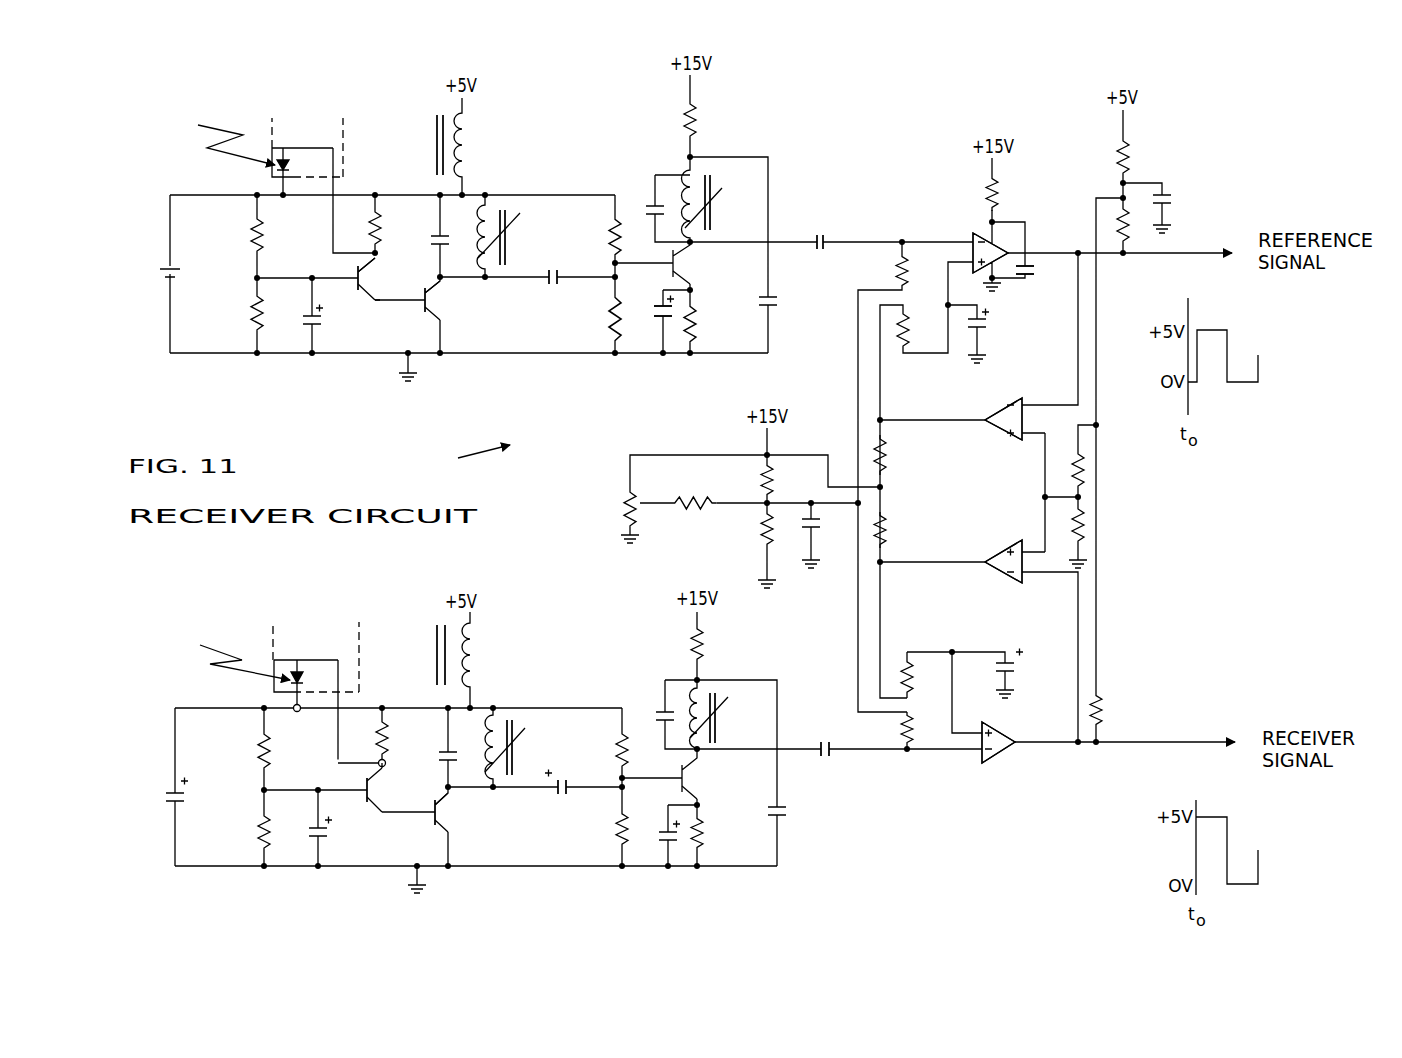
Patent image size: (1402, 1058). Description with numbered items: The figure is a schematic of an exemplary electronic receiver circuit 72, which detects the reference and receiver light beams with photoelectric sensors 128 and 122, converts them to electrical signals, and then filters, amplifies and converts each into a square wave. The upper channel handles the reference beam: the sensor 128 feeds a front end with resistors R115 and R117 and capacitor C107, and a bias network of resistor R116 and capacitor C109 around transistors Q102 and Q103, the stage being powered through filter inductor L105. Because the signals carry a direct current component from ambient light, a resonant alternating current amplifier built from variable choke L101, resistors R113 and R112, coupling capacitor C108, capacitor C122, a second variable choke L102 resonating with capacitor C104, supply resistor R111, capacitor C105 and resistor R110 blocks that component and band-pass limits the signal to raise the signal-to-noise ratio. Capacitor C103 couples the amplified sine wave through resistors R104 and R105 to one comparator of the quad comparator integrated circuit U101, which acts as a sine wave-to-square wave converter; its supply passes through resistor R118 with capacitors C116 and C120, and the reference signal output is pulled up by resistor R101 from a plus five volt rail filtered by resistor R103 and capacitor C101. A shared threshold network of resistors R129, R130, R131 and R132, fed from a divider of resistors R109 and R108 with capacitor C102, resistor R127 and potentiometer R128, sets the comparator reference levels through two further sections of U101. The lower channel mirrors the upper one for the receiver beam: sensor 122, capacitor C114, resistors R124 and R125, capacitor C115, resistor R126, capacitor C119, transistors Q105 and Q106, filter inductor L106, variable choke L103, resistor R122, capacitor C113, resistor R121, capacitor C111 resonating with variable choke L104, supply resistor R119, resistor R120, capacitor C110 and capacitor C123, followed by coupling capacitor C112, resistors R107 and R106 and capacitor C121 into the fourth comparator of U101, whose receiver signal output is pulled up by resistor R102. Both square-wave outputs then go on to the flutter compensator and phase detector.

The receiver circuit 72 is at (467, 458).
The photoelectric sensor 128 is at (270, 135).
The photoelectric sensor 122 is at (259, 651).
The resistor R115 is at (231, 235).
The resistor R117 is at (231, 313).
The capacitor C107 is at (341, 320).
The resistor R116 is at (398, 227).
The capacitor C109 is at (418, 249).
The transistor Q102 is at (388, 279).
The transistor Q103 is at (454, 296).
The filter inductor L105 is at (478, 145).
The variable choke L101 is at (528, 237).
The resistor R113 is at (593, 234).
The resistor R112 is at (593, 319).
The capacitor C108 is at (553, 289).
The capacitor C122 is at (651, 294).
The capacitor C104 is at (634, 198).
The variable choke L102 is at (731, 202).
The resistor R111 is at (720, 115).
The capacitor C105 is at (790, 288).
The resistor R110 is at (713, 324).
The capacitor C103 is at (821, 228).
The resistor R104 is at (878, 271).
The resistor R105 is at (920, 319).
The resistor R118 is at (1018, 193).
The capacitor C116 is at (1043, 281).
The capacitor C120 is at (1002, 323).
The resistor R103 is at (1152, 157).
The capacitor C101 is at (1183, 198).
The resistor R101 is at (1145, 228).
The IC LM 339 U101 is at (995, 491).
The resistor R129 is at (904, 455).
The resistor R130 is at (904, 530).
The resistor R131 is at (1107, 470).
The resistor R132 is at (1108, 525).
The resistor R109 is at (742, 480).
The resistor R108 is at (741, 529).
The resistor R127 is at (693, 513).
The potentiometer R128 is at (605, 509).
The capacitor C102 is at (830, 534).
The resistor R102 is at (1122, 710).
The resistor R107 is at (881, 729).
The resistor R106 is at (910, 661).
The capacitor C121 is at (1031, 665).
The capacitor C112 is at (819, 762).
The capacitor C114 is at (198, 792).
The resistor R124 is at (289, 751).
The resistor R125 is at (239, 832).
The capacitor C115 is at (341, 833).
The resistor R126 is at (405, 737).
The capacitor C119 is at (428, 753).
The transistor Q105 is at (394, 783).
The transistor Q106 is at (464, 809).
The filter inductor L106 is at (482, 655).
The variable choke L103 is at (534, 747).
The resistor R122 is at (596, 743).
The capacitor C113 is at (547, 794).
The resistor R121 is at (599, 829).
The capacitor C111 is at (649, 701).
The variable choke L104 is at (738, 718).
The resistor R119 is at (723, 644).
The resistor R120 is at (724, 833).
The capacitor C110 is at (800, 811).
The capacitor C123 is at (669, 857).